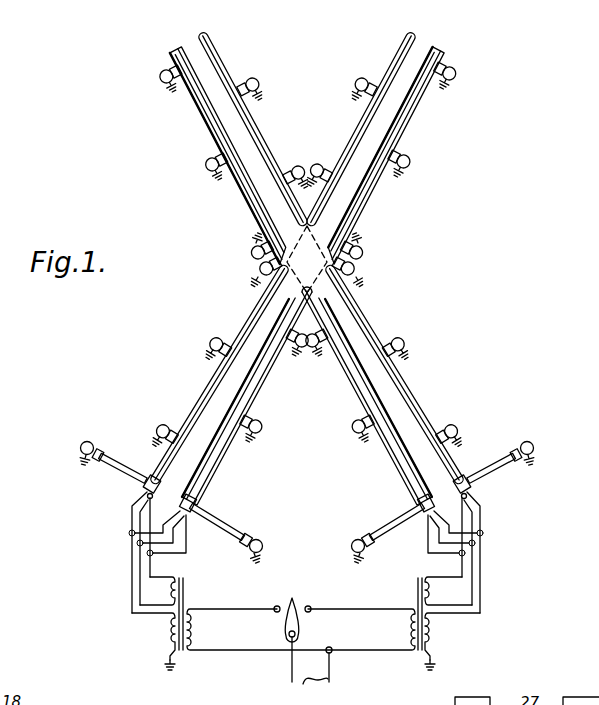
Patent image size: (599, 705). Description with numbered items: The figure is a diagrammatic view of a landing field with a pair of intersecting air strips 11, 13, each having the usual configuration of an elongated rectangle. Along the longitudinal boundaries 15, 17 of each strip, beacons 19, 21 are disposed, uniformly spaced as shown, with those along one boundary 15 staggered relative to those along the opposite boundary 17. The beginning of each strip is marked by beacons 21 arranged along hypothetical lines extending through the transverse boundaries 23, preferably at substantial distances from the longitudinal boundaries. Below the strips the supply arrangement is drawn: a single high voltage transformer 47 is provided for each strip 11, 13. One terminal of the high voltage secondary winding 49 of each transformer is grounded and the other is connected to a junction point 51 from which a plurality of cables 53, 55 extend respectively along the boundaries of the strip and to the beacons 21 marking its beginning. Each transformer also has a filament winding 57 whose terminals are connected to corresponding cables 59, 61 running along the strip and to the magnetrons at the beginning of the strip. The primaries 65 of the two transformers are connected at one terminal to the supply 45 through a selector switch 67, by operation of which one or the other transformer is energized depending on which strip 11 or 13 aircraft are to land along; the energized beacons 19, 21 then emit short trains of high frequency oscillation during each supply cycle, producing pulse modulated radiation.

The air strip 11 is at (383, 267).
The air strip 13 is at (220, 119).
The boundary 15 is at (410, 112).
The boundary 17 is at (366, 128).
The beacon 19 is at (404, 160).
The beacon 21 is at (208, 163).
The boundary 23 is at (461, 478).
The supply 45 is at (316, 676).
The high voltage transformer 47 is at (210, 674).
The high voltage secondary winding 49 is at (168, 632).
The junction point 51 is at (129, 535).
The cable 53 is at (166, 522).
The cable 55 is at (131, 519).
The filament winding 57 is at (180, 590).
The cable 59 is at (187, 536).
The cable 61 is at (132, 508).
The primary 65 is at (199, 630).
The selector switch 67 is at (326, 641).